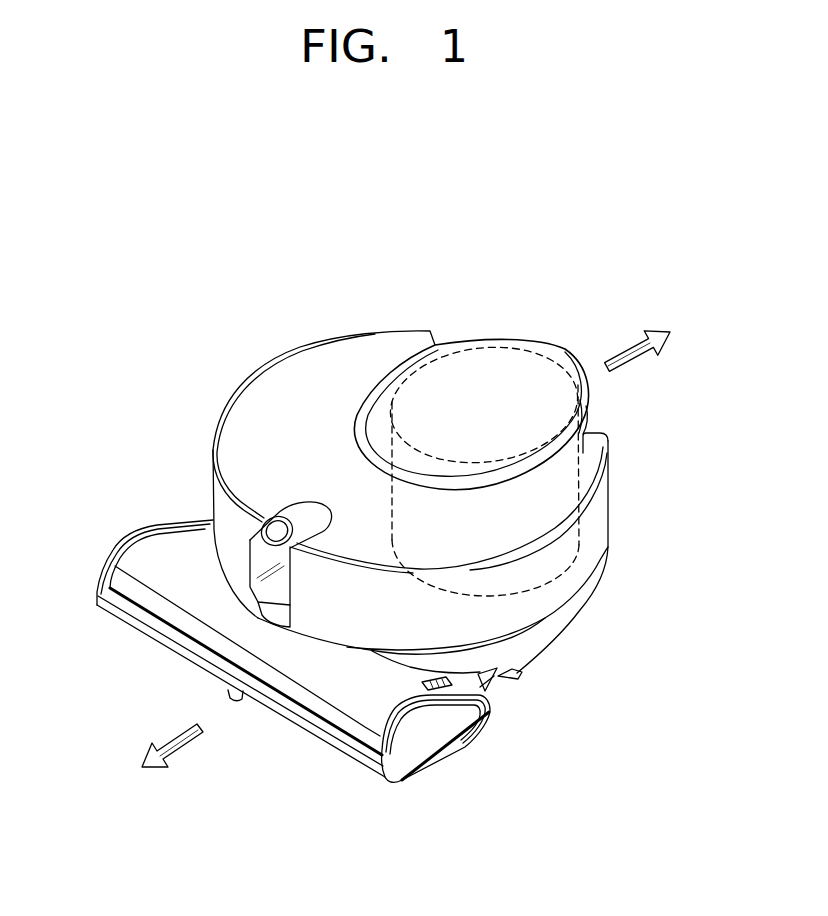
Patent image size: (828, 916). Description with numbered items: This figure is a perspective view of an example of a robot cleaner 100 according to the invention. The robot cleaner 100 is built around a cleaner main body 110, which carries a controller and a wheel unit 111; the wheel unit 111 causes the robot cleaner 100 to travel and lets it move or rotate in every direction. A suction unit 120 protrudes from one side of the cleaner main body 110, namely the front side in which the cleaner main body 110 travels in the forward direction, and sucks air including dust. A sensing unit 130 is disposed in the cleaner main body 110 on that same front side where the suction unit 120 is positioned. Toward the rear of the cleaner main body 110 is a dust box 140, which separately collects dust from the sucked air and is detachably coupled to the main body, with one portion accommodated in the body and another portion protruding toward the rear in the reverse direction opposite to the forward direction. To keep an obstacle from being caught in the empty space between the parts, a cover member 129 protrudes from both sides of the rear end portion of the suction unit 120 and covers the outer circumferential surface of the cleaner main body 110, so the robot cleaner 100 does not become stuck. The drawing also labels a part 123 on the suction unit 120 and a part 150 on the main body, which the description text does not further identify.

The robot cleaner 100 is at (244, 344).
The cleaner main body 110 is at (608, 523).
The wheel unit 111 is at (510, 678).
The suction unit 120 is at (152, 572).
The wheel 123 is at (228, 692).
The cover member 129 is at (486, 690).
The sensing unit 130 is at (262, 556).
The dust box 140 is at (583, 463).
The dust container 150 is at (509, 375).